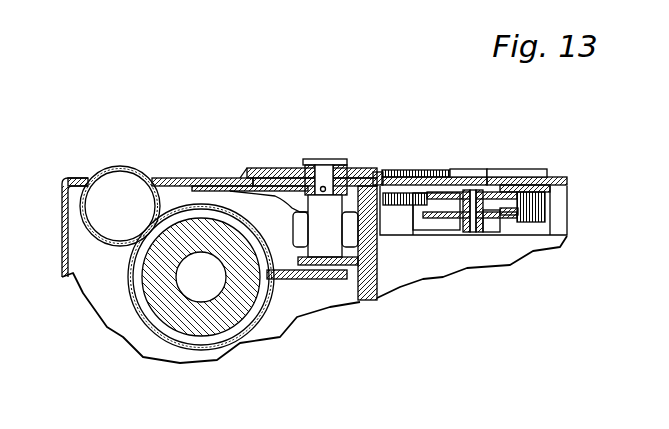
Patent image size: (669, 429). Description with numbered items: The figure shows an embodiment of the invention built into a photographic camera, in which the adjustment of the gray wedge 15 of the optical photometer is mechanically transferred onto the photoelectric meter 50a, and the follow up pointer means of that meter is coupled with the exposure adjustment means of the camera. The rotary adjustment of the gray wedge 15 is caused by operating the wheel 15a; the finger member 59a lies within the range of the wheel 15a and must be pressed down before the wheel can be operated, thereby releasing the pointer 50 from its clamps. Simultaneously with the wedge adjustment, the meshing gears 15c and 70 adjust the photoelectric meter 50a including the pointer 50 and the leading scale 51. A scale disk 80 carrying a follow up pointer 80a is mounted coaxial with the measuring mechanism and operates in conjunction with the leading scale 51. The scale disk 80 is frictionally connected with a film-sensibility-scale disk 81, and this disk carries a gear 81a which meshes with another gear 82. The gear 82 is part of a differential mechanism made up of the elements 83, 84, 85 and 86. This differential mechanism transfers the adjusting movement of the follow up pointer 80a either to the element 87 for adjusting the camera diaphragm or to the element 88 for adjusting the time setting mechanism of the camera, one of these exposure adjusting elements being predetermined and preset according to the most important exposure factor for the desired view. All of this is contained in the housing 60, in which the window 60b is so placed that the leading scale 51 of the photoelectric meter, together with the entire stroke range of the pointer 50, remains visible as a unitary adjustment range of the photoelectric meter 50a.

The gray wedge 15 is at (168, 302).
The wheel 15a is at (120, 190).
The gear 15c is at (193, 344).
The pointer 50 is at (200, 200).
The photoelectric meter 50a is at (325, 250).
The leading scale 51 is at (236, 177).
The finger member 59a is at (102, 168).
The housing 60 is at (87, 280).
The window 60b is at (207, 180).
The gear 70 is at (290, 281).
The scale disk 80 is at (320, 160).
The follow up pointer 80a is at (296, 170).
The film-sensibility-scale disk 81 is at (380, 168).
The gear 81a is at (393, 176).
The gear 82 is at (440, 178).
The differential mechanism element 83 is at (514, 190).
The differential mechanism element 84 is at (497, 194).
The differential mechanism element 85 is at (558, 185).
The differential mechanism element 86 is at (537, 218).
The diaphragm adjusting element 87 is at (405, 215).
The time setting adjusting element 88 is at (503, 220).